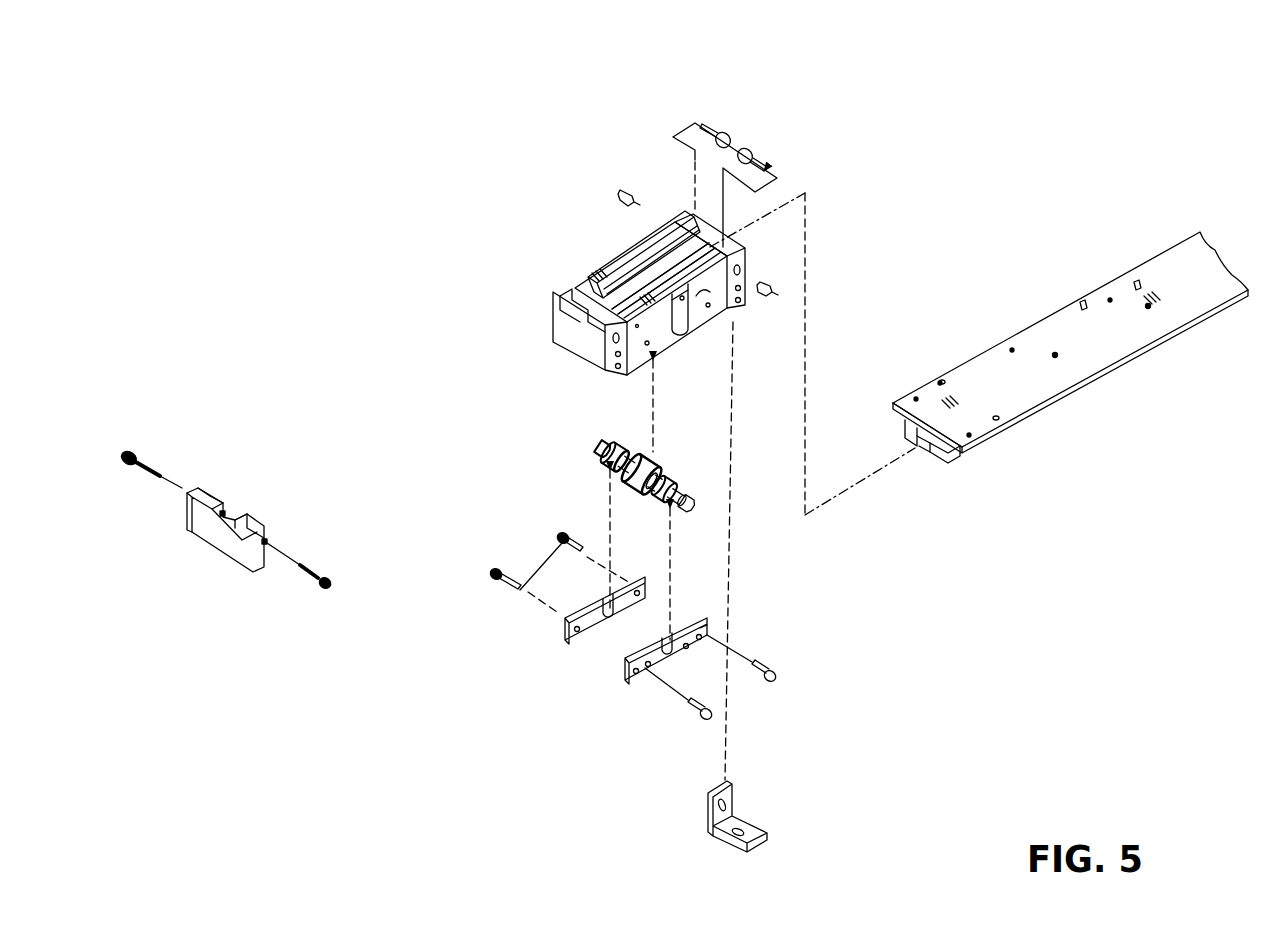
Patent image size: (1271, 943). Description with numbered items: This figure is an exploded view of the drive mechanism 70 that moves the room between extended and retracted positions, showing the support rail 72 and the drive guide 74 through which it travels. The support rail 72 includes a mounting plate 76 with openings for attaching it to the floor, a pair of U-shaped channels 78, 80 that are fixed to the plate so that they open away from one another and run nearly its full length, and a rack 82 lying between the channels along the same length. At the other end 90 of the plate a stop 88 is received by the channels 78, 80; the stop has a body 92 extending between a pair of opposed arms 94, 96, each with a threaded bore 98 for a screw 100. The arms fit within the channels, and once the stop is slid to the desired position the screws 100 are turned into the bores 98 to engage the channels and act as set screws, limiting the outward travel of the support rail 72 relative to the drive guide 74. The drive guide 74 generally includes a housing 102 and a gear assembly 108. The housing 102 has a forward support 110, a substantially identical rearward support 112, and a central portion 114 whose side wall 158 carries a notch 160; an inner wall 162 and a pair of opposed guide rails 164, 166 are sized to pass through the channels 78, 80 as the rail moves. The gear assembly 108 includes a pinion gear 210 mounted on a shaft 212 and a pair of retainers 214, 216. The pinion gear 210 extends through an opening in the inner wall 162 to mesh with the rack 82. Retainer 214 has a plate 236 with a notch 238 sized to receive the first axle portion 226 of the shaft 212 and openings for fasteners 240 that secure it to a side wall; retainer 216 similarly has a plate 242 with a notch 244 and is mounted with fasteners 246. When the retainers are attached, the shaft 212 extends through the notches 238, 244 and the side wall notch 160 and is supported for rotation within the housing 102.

The carriage assembly 70 is at (154, 95).
The support rail 72 is at (1182, 262).
The drive guide 74 is at (639, 132).
The mounting plate 76 is at (1033, 330).
The U-shaped channel 78 is at (916, 440).
The U-shaped channel 80 is at (946, 462).
The rack 82 is at (922, 450).
The stop 88 is at (217, 586).
The other end 90 is at (905, 400).
The body 92 is at (200, 522).
The arm 94 is at (217, 510).
The arm 96 is at (252, 522).
The threaded bores 98 is at (225, 515).
The screws 100 is at (146, 460).
The housing 102 is at (487, 160).
The gear assembly 108 is at (556, 442).
The forward support 110 is at (750, 312).
The rearward support 112 is at (552, 302).
The central portion 114 is at (640, 240).
The side wall 158 is at (685, 352).
The notch 160 is at (674, 324).
The inner wall 162 is at (600, 318).
The guide rail 164 is at (628, 312).
The guide rail 166 is at (702, 300).
The pinion gear 210 is at (668, 466).
The shaft 212 is at (703, 499).
The retainer 214 is at (565, 638).
The retainer 216 is at (712, 623).
The first axle portion 226 is at (604, 456).
The plate 236 is at (590, 628).
The notch 238 is at (606, 600).
The fasteners 240 is at (500, 592).
The plate 242 is at (712, 633).
The notch 244 is at (670, 640).
The fasteners 246 is at (712, 707).